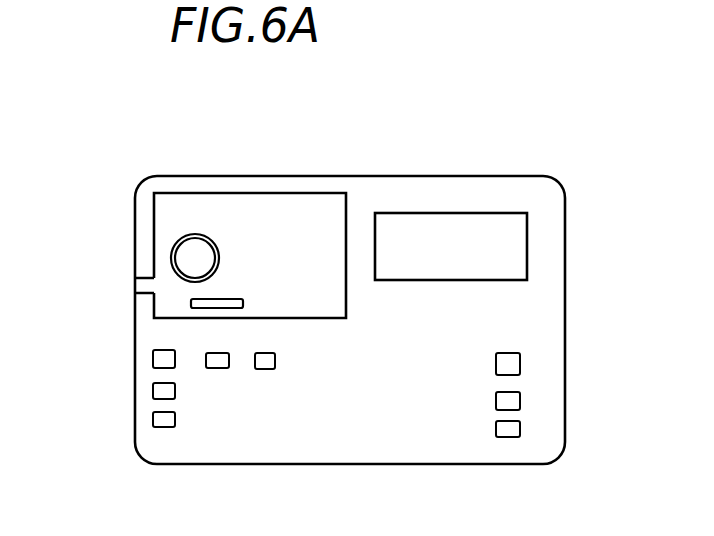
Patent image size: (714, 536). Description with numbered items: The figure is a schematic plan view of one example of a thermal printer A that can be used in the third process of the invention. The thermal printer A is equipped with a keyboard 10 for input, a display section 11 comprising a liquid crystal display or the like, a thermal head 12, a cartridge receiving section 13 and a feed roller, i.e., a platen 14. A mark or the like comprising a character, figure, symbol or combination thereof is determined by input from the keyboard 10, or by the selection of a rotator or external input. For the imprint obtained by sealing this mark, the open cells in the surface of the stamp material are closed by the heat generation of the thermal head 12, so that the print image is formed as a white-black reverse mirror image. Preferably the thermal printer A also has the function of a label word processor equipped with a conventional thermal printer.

The keyboard 10 is at (197, 452).
The display section 11 is at (443, 220).
The thermal head 12 is at (192, 303).
The cartridge receiving section 13 is at (257, 205).
The platen 14 is at (174, 243).
The thermal printer A is at (350, 158).